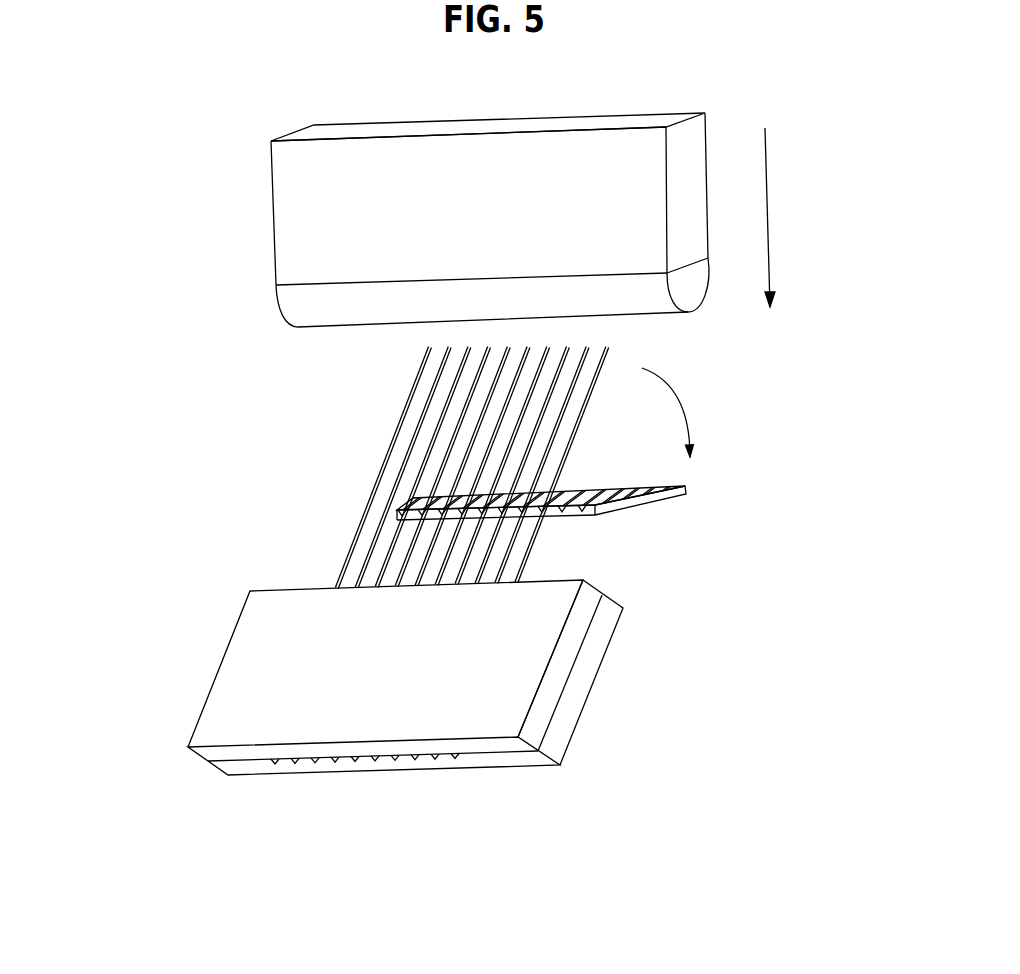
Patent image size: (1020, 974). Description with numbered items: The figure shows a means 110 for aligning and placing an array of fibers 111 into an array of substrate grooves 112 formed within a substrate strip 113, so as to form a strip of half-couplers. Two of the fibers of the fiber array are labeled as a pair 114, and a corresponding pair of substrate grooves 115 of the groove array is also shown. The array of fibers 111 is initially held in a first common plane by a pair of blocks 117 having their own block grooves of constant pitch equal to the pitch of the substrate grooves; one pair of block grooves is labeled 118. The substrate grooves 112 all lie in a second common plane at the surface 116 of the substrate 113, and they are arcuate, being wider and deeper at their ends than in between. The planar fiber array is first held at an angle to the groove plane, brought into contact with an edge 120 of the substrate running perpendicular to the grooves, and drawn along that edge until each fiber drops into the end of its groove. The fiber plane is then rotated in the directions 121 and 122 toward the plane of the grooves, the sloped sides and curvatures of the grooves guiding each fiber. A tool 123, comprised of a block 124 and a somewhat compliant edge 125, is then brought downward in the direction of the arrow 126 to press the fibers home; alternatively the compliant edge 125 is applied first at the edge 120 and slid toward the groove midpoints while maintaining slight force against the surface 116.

The means 110 is at (178, 455).
The array of fibers 111 is at (353, 425).
The array of substrate grooves 112 is at (588, 465).
The substrate strip 113 is at (697, 485).
The pair of fibers 114 is at (606, 347).
The pair of substrate grooves 115 is at (558, 513).
The surface of the substrate 116 is at (605, 488).
The pair of blocks 117 is at (623, 687).
The pair of block grooves 118 is at (435, 755).
The edge of the substrate 120 is at (555, 513).
The direction of rotation 121 is at (680, 405).
The direction of rotation 122 is at (463, 697).
The tool 123 is at (242, 214).
The block 124 is at (302, 162).
The somewhat compliant edge 125 is at (312, 298).
The arrow 126 is at (768, 205).